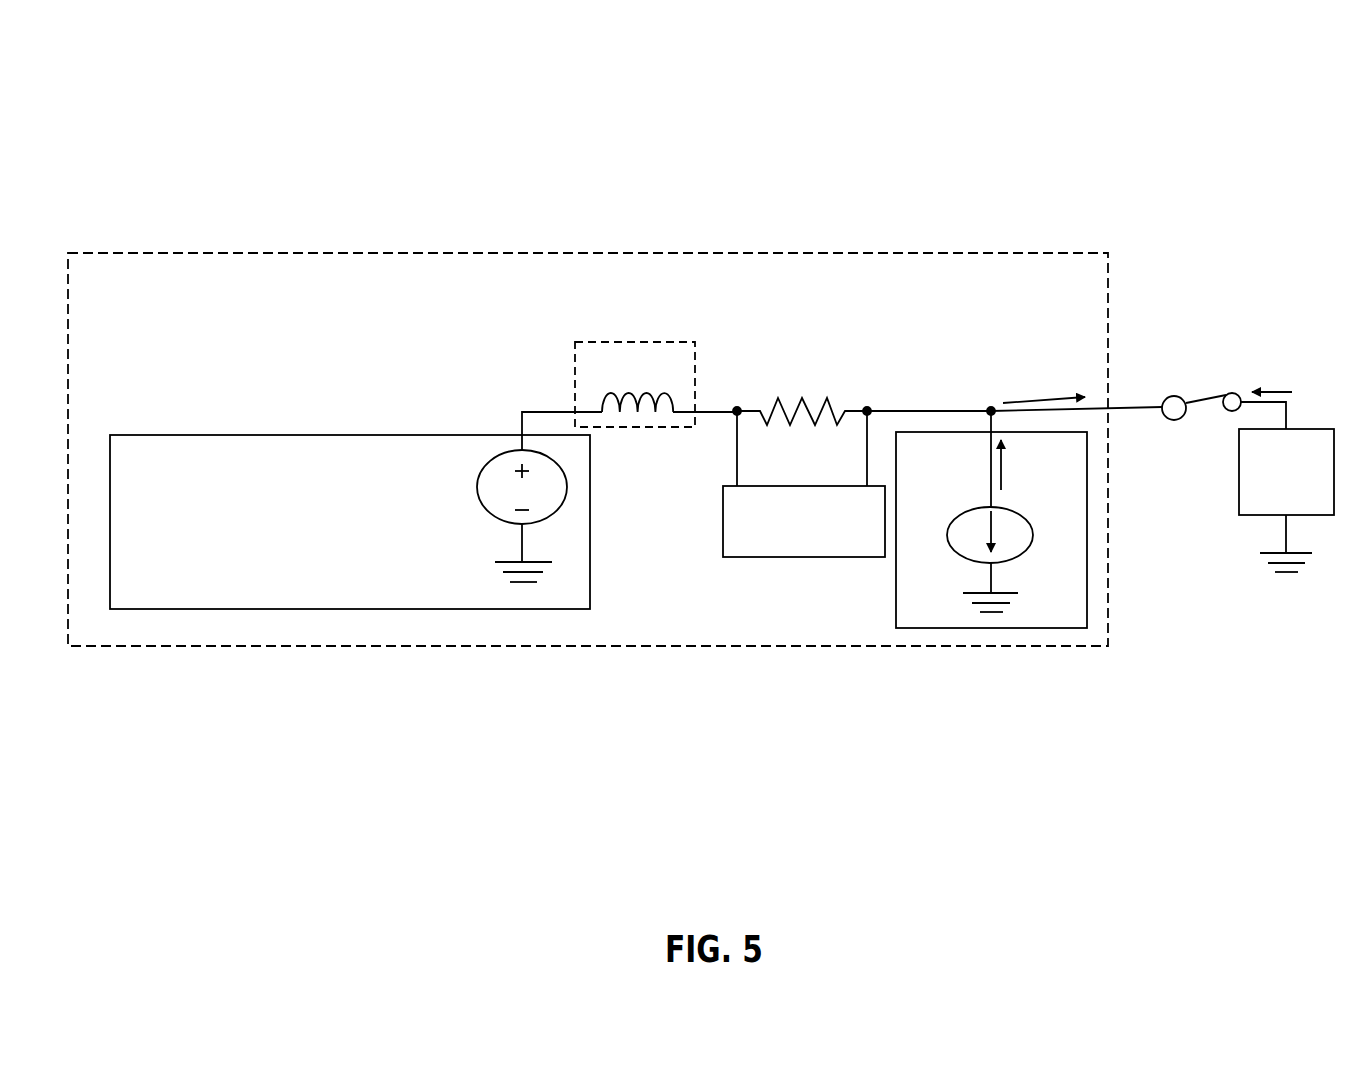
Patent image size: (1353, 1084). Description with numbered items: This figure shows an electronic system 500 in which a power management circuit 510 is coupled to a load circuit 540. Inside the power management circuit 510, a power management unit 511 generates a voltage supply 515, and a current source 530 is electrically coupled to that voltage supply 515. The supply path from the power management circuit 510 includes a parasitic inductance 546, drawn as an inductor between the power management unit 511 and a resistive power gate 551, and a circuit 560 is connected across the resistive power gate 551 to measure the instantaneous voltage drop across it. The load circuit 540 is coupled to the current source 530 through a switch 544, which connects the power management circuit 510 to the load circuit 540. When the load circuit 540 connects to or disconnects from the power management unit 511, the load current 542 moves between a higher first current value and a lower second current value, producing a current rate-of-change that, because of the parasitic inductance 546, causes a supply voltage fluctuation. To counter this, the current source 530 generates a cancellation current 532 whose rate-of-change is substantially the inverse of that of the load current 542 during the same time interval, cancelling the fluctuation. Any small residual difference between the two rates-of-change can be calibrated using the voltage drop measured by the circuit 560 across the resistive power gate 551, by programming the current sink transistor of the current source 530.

The electronic system 500 is at (1245, 106).
The power management circuit 510 is at (412, 284).
The power management unit 511 is at (207, 501).
The voltage supply 515 is at (540, 412).
The parasitic inductance 546 is at (673, 342).
The resistive power gate 551 is at (828, 400).
The circuit 560 is at (825, 547).
The current source 530 is at (1078, 616).
The cancellation current 532 is at (1004, 462).
The switch 544 is at (1205, 398).
The load current 542 is at (1270, 390).
The load circuit 540 is at (1308, 497).